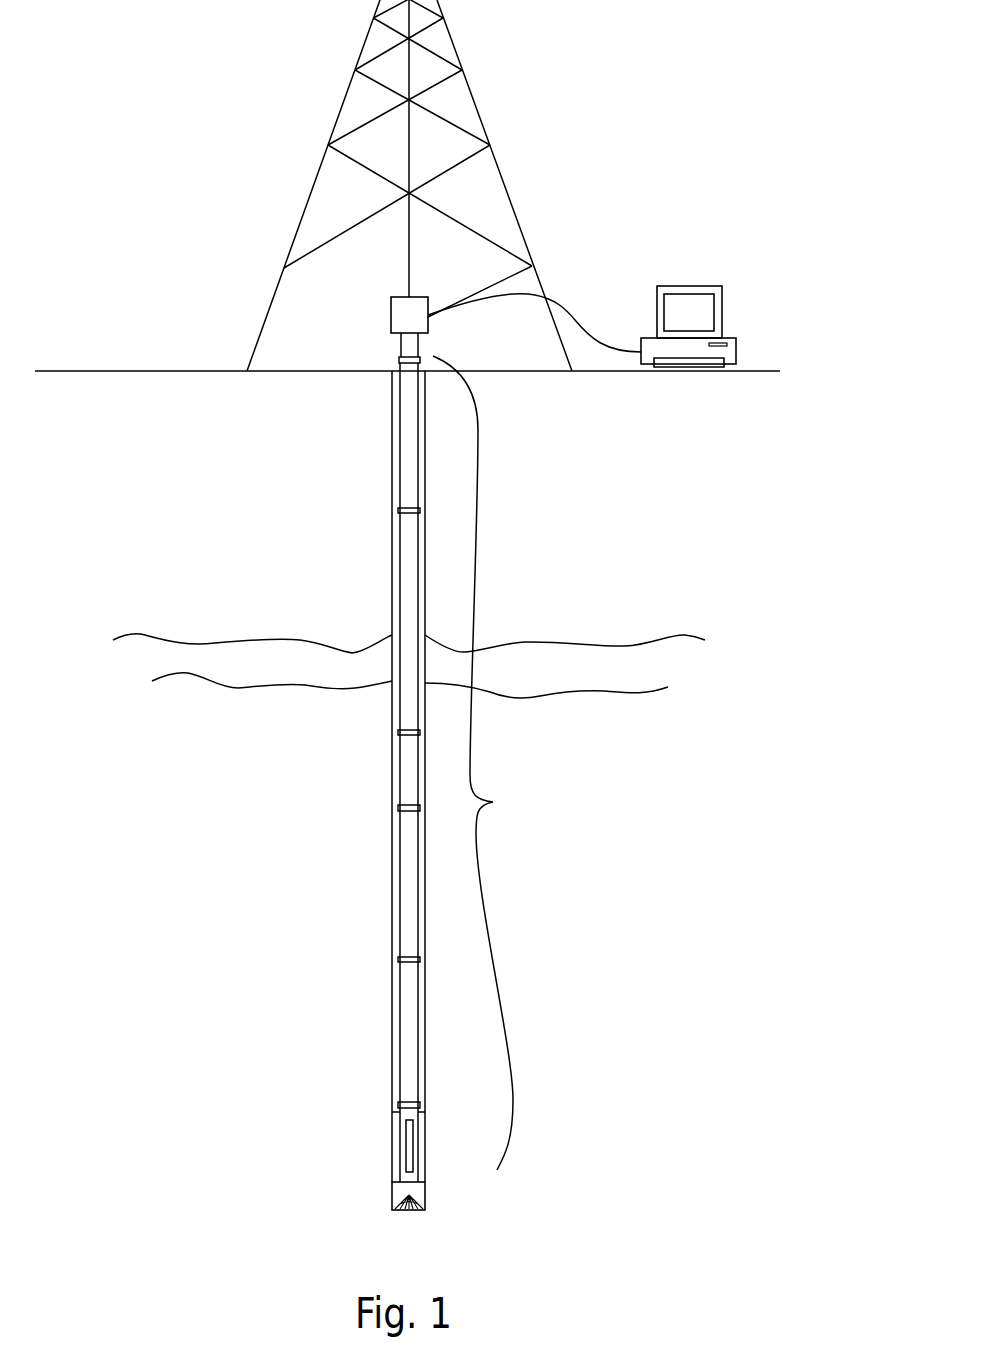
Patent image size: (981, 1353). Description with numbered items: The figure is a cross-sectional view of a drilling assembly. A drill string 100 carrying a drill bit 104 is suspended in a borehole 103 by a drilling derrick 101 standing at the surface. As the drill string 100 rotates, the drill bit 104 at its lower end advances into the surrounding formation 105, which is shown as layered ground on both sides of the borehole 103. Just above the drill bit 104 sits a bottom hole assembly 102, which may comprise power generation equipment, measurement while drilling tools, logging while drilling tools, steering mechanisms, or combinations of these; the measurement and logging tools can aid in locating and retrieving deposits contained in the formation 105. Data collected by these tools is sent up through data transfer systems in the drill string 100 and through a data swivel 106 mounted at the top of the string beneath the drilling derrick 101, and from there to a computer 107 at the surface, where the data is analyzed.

The drill string 100 is at (494, 802).
The drilling derrick 101 is at (503, 178).
The bottom hole assembly 102 is at (300, 1132).
The borehole 103 is at (398, 917).
The drill bit 104 is at (300, 1198).
The formation 105 is at (632, 521).
The data swivel 106 is at (407, 312).
The computer 107 is at (692, 308).